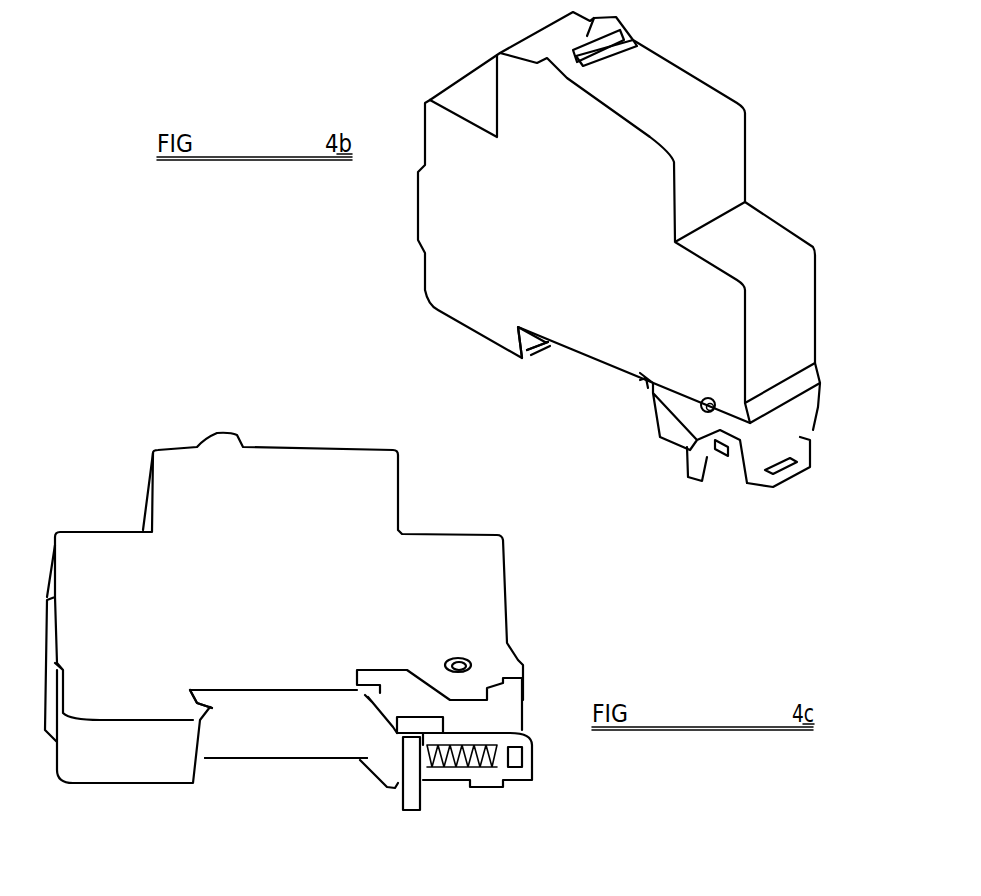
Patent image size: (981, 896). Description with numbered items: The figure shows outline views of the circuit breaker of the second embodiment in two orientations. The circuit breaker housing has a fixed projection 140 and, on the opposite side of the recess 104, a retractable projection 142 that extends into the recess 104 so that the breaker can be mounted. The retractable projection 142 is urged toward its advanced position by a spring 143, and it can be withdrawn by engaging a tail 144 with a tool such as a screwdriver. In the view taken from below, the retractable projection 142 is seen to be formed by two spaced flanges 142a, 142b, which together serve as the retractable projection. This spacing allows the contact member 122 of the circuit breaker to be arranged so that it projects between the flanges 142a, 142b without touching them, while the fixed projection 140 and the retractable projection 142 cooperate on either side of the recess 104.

In FIG. 4C, the recess 104 is at (280, 745).
In FIG. 4B, the contact member 122 is at (707, 473).
In FIG. 4C, the contact member 122 is at (417, 808).
In FIG. 4B, the fixed projection 140 is at (530, 353).
In FIG. 4C, the fixed projection 140 is at (203, 767).
In FIG. 4B, the retractable projection 142 is at (650, 417).
In FIG. 4C, the flange 142a is at (368, 700).
In FIG. 4C, the flange 142b is at (362, 767).
In FIG. 4C, the spring 143 is at (477, 760).
In FIG. 4B, the tail 144 is at (810, 463).
In FIG. 4C, the tail 144 is at (535, 753).